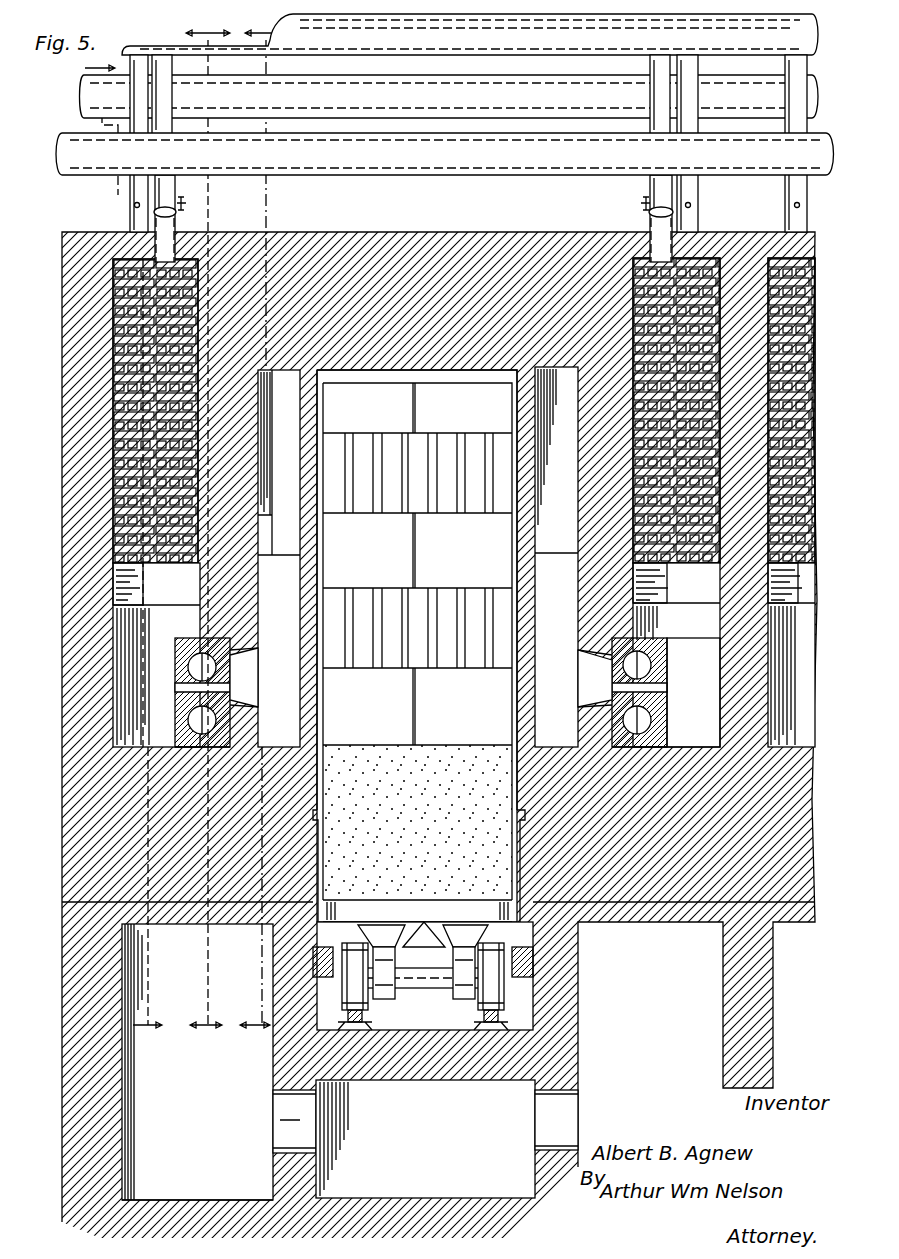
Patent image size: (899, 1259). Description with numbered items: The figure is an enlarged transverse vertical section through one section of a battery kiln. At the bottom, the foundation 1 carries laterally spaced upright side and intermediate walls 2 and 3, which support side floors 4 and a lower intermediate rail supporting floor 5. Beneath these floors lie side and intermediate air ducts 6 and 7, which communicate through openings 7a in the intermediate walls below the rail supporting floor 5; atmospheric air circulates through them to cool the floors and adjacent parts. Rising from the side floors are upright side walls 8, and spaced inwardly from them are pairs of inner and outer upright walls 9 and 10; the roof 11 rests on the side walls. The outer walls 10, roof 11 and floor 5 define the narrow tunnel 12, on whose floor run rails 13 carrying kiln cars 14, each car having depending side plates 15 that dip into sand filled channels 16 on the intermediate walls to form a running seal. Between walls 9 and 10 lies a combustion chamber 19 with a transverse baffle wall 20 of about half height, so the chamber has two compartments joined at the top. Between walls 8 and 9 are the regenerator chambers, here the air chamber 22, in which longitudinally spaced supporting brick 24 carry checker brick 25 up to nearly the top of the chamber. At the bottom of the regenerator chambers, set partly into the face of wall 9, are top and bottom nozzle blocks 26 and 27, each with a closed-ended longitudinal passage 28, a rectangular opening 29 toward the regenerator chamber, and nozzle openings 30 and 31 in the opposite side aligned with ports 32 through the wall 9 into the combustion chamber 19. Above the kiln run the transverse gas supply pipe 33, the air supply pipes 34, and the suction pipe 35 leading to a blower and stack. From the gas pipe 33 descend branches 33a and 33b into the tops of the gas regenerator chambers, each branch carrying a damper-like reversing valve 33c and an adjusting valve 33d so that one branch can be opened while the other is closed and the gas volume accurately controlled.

The foundation 1 is at (185, 1195).
The side wall 2 is at (127, 1140).
The intermediate wall 3 is at (273, 1177).
The side floor 4 is at (218, 925).
The rail supporting floor 5 is at (392, 1036).
The side air duct 6 is at (65, 1102).
The intermediate air duct 7 is at (510, 1093).
The opening 7a is at (660, 665).
The upright side wall 8 is at (57, 592).
The inner upright wall 9 is at (198, 584).
The outer upright wall 10 is at (300, 577).
The top wall or roof 11 is at (535, 232).
The tunnel 12 is at (415, 370).
The rail 13 is at (368, 1003).
The kiln car 14 is at (430, 925).
The side plate 15 is at (417, 912).
The sand filled channel 16 is at (423, 977).
The combustion chamber 19 is at (270, 367).
The transverse baffle wall 20 is at (278, 560).
The air regenerating chamber 22 is at (110, 260).
The supporting brick 24 is at (115, 574).
The checker brick 25 is at (120, 480).
The top nozzle block 26 is at (237, 645).
The bottom nozzle block 27 is at (178, 745).
The longitudinal passage 28 is at (195, 690).
The rectangular opening 29 is at (190, 665).
The nozzle opening 30 is at (232, 657).
The nozzle opening 31 is at (236, 703).
The port 32 is at (245, 682).
The gas supply pipe 33 is at (828, 140).
The branch 33a is at (132, 190).
The branch 33b is at (168, 188).
The reversing valve 33c is at (186, 205).
The adjusting valve 33d is at (178, 216).
The air supply pipe 34 is at (814, 98).
The suction pipe 35 is at (815, 42).